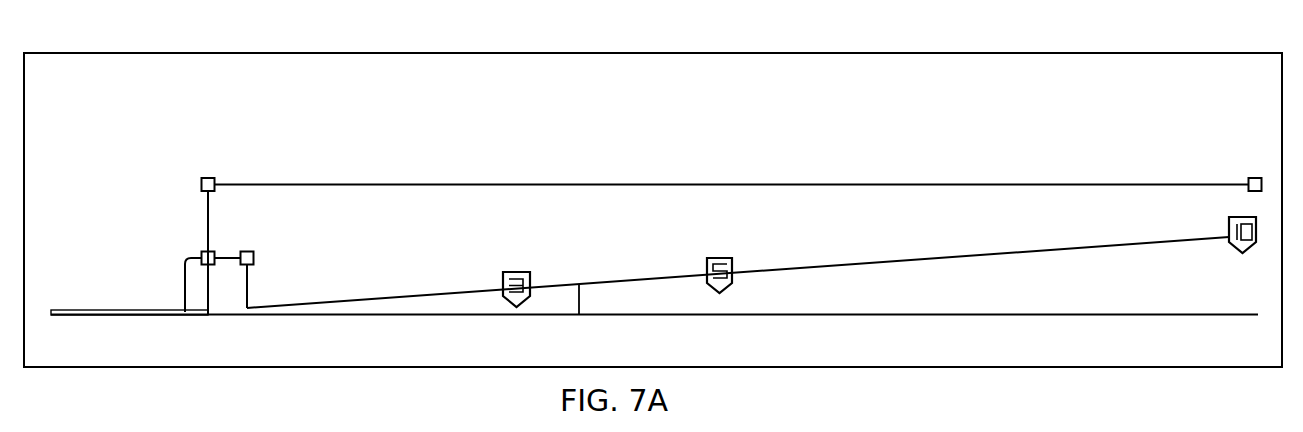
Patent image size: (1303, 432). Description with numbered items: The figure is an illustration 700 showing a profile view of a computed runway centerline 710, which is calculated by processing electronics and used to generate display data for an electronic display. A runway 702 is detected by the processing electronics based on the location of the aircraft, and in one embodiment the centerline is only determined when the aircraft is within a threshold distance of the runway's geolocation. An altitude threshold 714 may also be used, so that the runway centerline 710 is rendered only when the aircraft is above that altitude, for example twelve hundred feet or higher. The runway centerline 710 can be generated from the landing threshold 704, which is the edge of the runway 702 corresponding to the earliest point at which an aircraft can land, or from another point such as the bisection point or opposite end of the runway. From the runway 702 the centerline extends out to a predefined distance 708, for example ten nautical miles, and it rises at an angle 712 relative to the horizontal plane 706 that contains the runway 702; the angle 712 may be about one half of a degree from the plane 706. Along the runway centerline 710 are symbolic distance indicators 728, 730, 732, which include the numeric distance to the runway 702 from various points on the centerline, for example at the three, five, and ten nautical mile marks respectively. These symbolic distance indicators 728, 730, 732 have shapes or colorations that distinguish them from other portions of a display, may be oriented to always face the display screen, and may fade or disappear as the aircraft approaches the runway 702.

The illustration 700 is at (135, 34).
The runway 702 is at (66, 311).
The landing threshold 704 is at (216, 329).
The horizontal plane 706 is at (445, 316).
The predefined distance 708 is at (601, 183).
The runway centerline 710 is at (357, 300).
The angle 712 is at (582, 297).
The altitude threshold 714 is at (184, 284).
The symbolic distance indicator 728 is at (511, 272).
The symbolic distance indicator 730 is at (714, 258).
The symbolic distance indicator 732 is at (1229, 226).